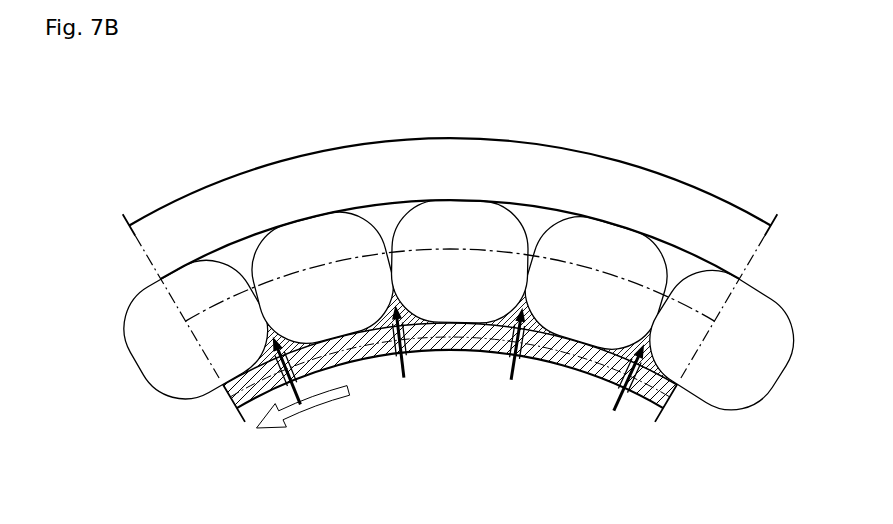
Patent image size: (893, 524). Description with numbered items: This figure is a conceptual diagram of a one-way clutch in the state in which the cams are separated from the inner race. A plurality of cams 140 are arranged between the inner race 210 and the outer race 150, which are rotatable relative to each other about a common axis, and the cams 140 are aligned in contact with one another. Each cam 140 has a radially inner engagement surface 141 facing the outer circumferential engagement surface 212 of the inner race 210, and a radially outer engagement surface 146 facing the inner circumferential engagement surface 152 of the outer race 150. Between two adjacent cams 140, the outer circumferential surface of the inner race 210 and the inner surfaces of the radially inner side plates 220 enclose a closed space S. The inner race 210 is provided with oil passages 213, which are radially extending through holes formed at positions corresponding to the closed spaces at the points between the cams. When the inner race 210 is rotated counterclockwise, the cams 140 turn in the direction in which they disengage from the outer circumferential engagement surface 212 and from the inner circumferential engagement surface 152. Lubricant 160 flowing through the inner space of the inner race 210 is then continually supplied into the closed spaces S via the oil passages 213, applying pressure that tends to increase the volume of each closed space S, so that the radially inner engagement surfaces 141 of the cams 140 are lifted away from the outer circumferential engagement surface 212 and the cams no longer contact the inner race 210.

The cam 140 is at (418, 218).
The radially inner engagement surface 141 is at (452, 340).
The radially outer engagement surface 146 is at (446, 200).
The outer race 150 is at (268, 161).
The inner circumferential engagement surface 152 is at (511, 204).
The lubricant 160 is at (543, 347).
The inner race 210 is at (613, 402).
The outer circumferential engagement surface 212 is at (505, 323).
The oil passage 213 is at (523, 348).
The radially inner side plate 220 is at (612, 268).
The closed space S is at (352, 378).